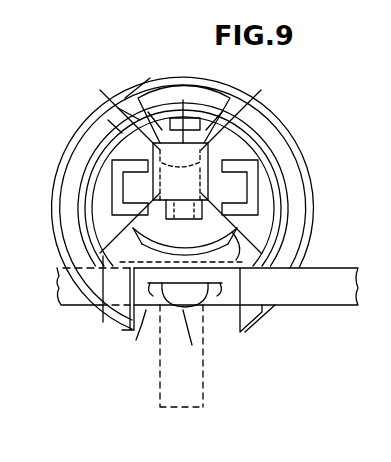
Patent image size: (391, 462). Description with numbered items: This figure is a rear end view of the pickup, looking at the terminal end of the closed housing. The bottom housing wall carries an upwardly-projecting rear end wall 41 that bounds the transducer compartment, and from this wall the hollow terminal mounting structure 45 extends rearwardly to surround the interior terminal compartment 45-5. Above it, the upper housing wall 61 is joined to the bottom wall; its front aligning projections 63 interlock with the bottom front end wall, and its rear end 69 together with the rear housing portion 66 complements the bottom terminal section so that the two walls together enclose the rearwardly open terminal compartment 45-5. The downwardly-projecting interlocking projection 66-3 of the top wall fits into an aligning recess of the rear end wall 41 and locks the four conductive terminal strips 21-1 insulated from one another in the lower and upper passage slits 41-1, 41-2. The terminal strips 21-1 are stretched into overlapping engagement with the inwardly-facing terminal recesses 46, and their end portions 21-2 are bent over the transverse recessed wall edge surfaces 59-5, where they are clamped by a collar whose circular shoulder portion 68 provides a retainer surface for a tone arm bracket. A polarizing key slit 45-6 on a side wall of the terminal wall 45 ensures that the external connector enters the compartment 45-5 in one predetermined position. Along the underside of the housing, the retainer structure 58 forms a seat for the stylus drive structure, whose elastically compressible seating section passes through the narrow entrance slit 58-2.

The rear end wall 41 is at (300, 214).
The lower passage slits 41-1 is at (180, 171).
The upper passage slits 41-2 is at (184, 209).
The hollow terminal mounting structure 45 is at (276, 146).
The terminal compartment 45-5 is at (144, 158).
The polarizing key slit 45-6 is at (272, 172).
The terminal recesses 46 is at (165, 136).
The recessed wall edge surfaces 59-5 is at (246, 236).
The upper housing wall 61 is at (150, 80).
The aligning projections 63 is at (125, 96).
The rear housing portion 66 is at (197, 100).
The interlocking projection 66-3 is at (228, 92).
The circular shoulder portion 68 is at (105, 113).
The rear end of upper housing wall 69 is at (197, 82).
The terminal strips 21-1 is at (72, 246).
The foil strip end portions 21-2 is at (100, 120).
The retainer structure 58 is at (150, 312).
The entrance slit 58-2 is at (196, 335).